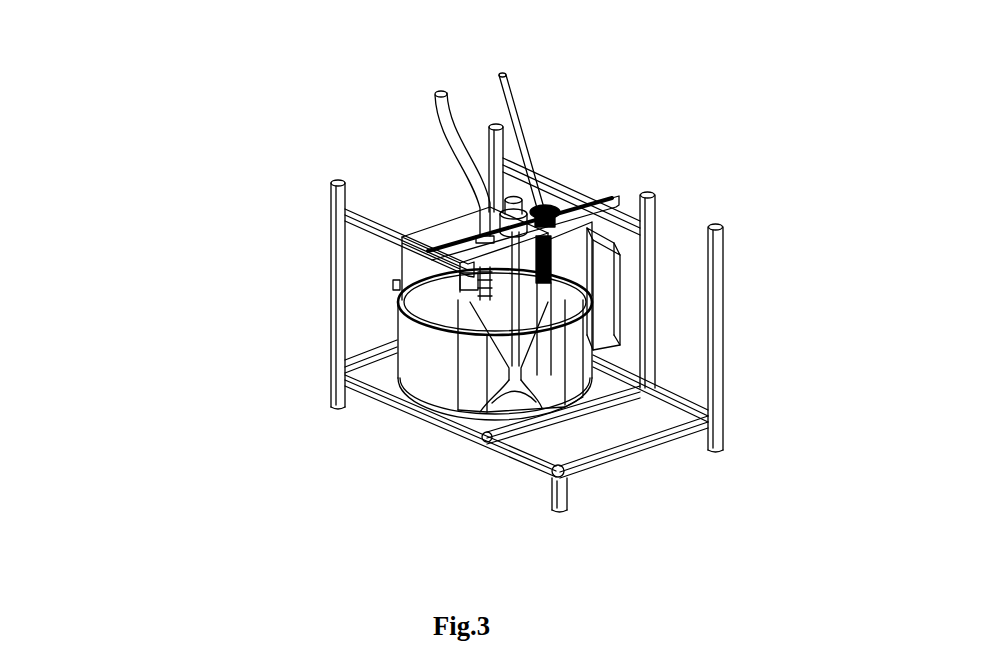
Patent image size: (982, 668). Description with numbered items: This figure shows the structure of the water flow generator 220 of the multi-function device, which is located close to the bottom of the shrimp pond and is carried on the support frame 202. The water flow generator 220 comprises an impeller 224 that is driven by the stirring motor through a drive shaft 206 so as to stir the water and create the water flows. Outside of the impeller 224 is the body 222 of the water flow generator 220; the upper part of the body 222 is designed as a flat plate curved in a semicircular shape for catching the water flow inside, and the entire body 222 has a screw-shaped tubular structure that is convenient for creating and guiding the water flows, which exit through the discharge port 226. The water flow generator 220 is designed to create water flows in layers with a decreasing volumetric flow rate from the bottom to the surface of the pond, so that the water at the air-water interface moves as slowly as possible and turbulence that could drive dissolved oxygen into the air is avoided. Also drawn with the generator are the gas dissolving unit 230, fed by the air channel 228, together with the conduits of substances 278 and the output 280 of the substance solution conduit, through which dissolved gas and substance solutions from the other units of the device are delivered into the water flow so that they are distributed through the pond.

The water flow generator 220 is at (264, 204).
The support frame 202 is at (330, 280).
The gas dissolving unit 230 is at (640, 228).
The body 222 is at (443, 380).
The output 280 is at (447, 310).
The impeller 224 is at (542, 372).
The discharge port 226 is at (610, 312).
The air channel 228 is at (497, 100).
The conduits of substances 278 is at (458, 167).
The drive shaft 206 is at (512, 187).